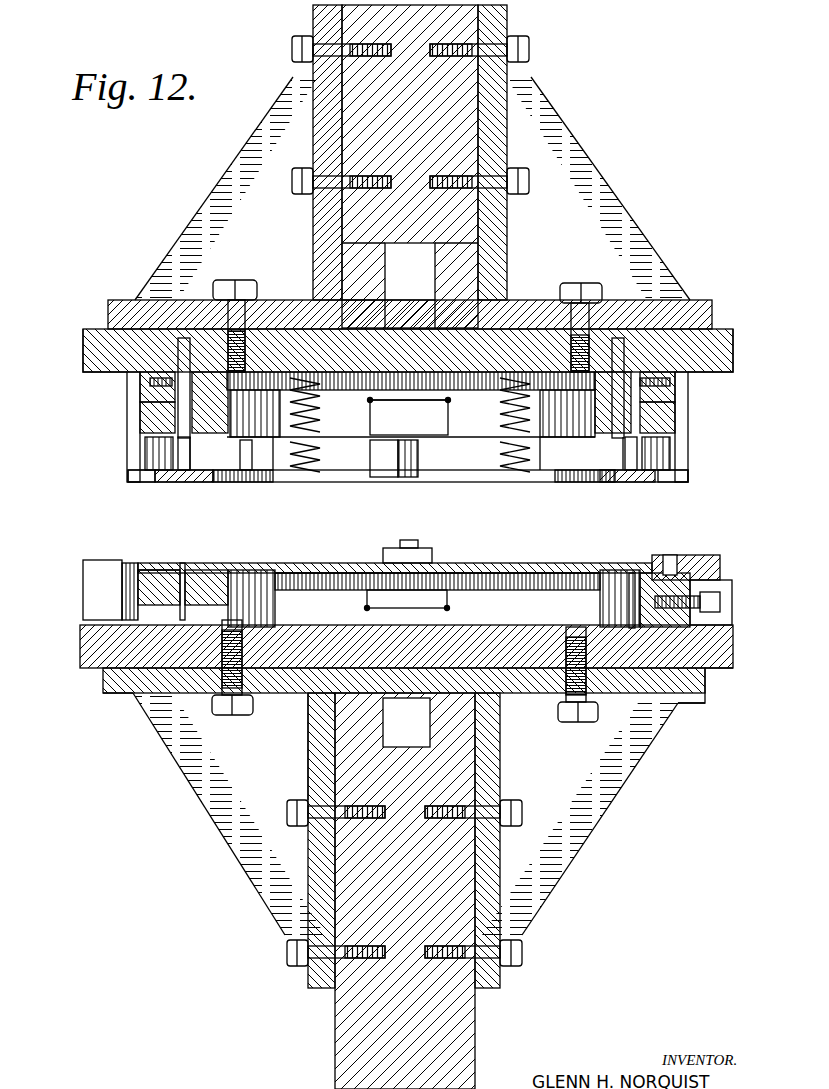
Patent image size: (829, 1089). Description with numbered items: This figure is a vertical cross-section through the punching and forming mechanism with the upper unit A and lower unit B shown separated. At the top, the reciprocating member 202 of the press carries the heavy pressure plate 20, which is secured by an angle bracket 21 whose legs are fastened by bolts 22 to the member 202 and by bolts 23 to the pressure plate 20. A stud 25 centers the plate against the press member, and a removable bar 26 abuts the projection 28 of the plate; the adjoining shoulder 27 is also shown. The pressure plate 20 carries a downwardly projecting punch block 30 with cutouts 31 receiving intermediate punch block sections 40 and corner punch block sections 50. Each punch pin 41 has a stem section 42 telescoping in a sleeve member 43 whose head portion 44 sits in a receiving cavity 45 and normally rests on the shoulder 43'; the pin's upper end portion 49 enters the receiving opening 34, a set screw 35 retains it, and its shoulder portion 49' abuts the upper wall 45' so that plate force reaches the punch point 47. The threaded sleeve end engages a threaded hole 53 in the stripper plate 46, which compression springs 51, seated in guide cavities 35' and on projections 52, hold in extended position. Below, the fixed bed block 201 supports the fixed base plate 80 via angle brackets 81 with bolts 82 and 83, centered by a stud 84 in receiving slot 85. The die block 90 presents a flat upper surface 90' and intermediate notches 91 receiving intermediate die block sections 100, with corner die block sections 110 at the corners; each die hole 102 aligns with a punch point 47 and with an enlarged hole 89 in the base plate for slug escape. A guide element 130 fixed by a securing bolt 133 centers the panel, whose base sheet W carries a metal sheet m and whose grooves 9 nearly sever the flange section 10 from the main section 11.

The reciprocating member 202 is at (410, 166).
The bolts 22 is at (305, 62).
The angle bracket 21 is at (243, 150).
The bolts 23 is at (228, 284).
The shoulder 27 is at (372, 234).
The removable bar 26 is at (352, 270).
The stud 25 is at (457, 278).
The projection 28 is at (412, 300).
The receiving opening 34 is at (160, 300).
The pressure plate 20 is at (408, 350).
The upper end portion 49 is at (409, 343).
The shoulder portion 49' is at (410, 386).
The upper wall 45' is at (411, 390).
The set screw 35 is at (414, 382).
The receiving cavity 45 is at (424, 379).
The intermediate punch block section 40 is at (133, 420).
The head portion 44 is at (145, 425).
The punch pin 41 is at (150, 445).
The stem section 42 is at (180, 450).
The sleeve member 43 is at (402, 470).
The shoulder 43' is at (464, 485).
The stripper plate 46 is at (140, 482).
The punch point 47 is at (184, 480).
The threaded hole 53 is at (198, 483).
The corner punch block section 50 is at (276, 482).
The projection 52 is at (300, 478).
The compression spring 51 is at (330, 455).
The guide cavity 35' is at (410, 419).
The punch block 30 is at (760, 394).
The cutouts 31 is at (448, 418).
The upper unit A is at (668, 214).
The intermediate die block section 100 is at (150, 590).
The flange section 10 is at (195, 563).
The die hole 102 is at (182, 564).
The grooves 9 is at (228, 566).
The base sheet W is at (255, 566).
The corner die block section 110 is at (282, 595).
The metal sheet m is at (340, 590).
The intermediate notches 91 is at (518, 573).
The securing bolt 133 is at (420, 540).
The guide element 130 is at (434, 556).
The main section 11 is at (354, 563).
The die block 90 is at (721, 610).
The upper surface 90' is at (145, 549).
The fixed base plate 80 is at (708, 680).
The enlarged hole 89 is at (133, 695).
The bolts 83 is at (232, 716).
The angle brackets 81 is at (232, 812).
The stud 84 is at (335, 725).
The fixed bed block 201 is at (404, 891).
The receiving slot 85 is at (403, 748).
The bolts 82 is at (290, 945).
The lower unit B is at (655, 800).